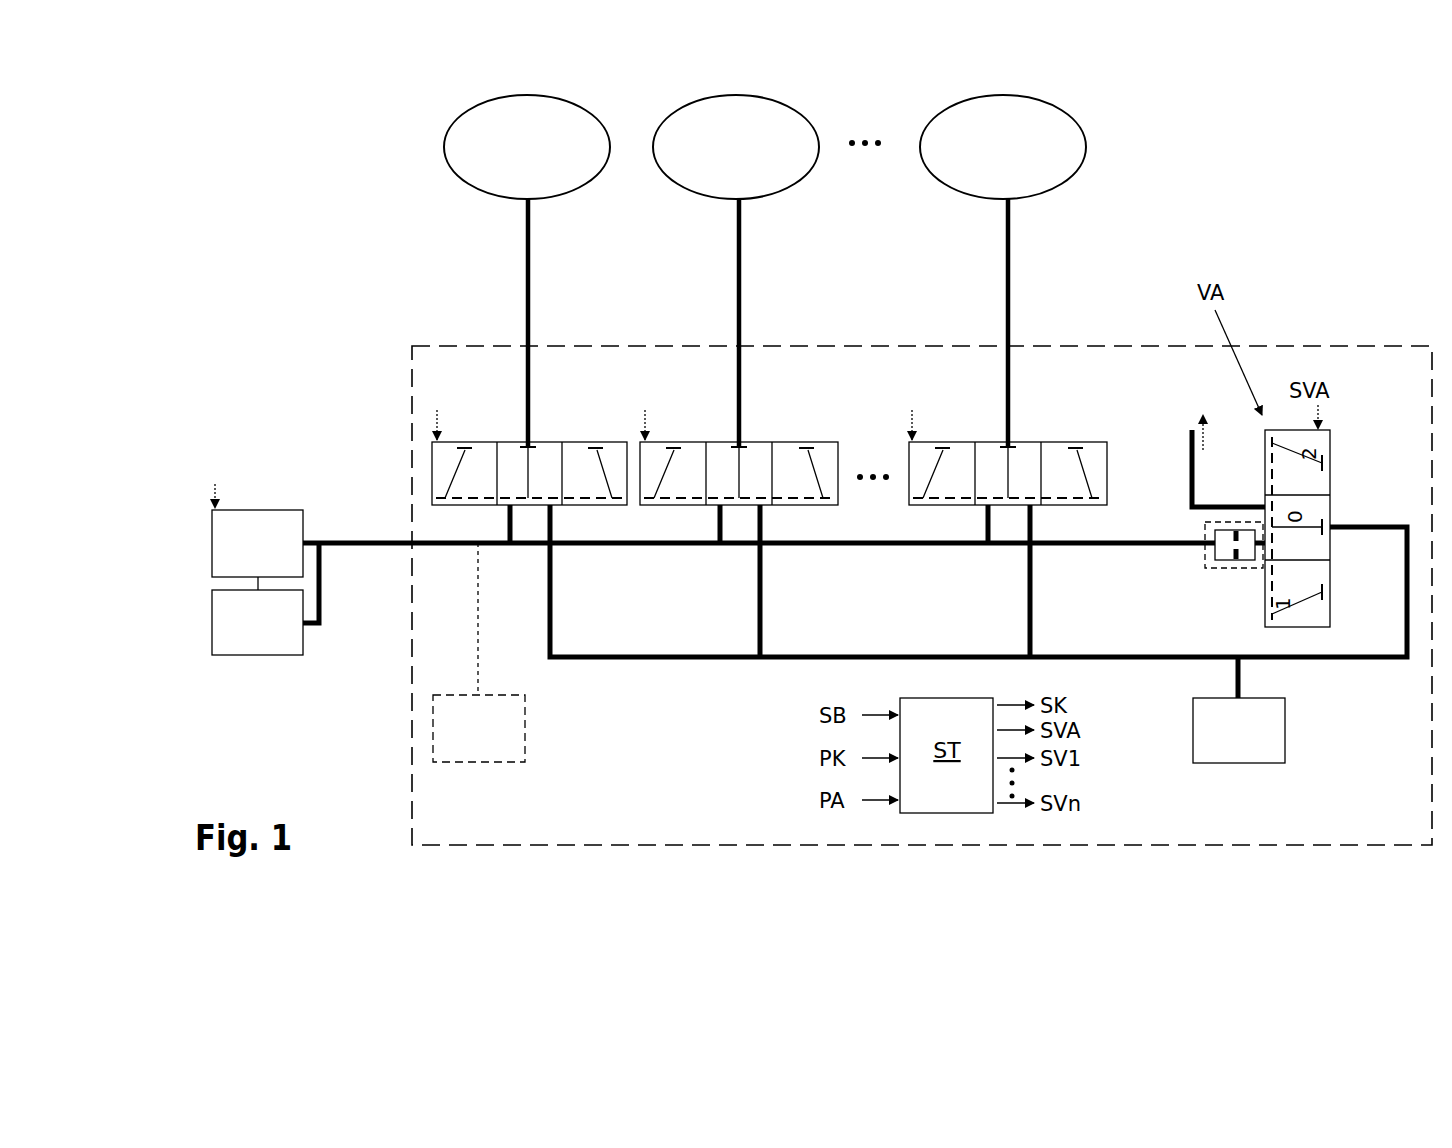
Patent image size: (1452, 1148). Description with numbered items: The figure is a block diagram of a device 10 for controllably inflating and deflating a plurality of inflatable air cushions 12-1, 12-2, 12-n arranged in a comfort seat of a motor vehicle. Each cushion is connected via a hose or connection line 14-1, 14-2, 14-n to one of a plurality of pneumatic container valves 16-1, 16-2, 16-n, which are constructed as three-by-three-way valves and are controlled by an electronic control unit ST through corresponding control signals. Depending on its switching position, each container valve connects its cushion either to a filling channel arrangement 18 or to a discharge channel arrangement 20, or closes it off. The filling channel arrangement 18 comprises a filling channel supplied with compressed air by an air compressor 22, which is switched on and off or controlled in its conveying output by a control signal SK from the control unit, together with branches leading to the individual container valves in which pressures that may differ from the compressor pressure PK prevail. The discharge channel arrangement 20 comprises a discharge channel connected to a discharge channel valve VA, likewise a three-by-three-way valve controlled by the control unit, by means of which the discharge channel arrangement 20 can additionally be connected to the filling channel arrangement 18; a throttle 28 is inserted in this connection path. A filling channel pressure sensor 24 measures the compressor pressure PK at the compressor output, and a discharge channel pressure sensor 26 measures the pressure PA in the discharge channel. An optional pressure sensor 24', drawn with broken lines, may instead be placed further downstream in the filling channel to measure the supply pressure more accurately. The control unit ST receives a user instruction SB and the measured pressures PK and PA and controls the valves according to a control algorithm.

The device 10 is at (393, 320).
The air cushion 12-1 is at (572, 192).
The air cushion 12-2 is at (781, 192).
The air cushion 12-n is at (1042, 196).
The connection line 14-1 is at (531, 322).
The connection line 14-2 is at (742, 322).
The connection line 14-n is at (1011, 322).
The container valve 16-1 is at (497, 408).
The container valve 16-2 is at (710, 408).
The container valve 16-n is at (975, 408).
The filling channel arrangement 18 is at (663, 550).
The discharge channel arrangement 20 is at (660, 663).
The air compressor 22 is at (250, 527).
The filling channel pressure sensor 24 is at (265, 624).
The pressure sensor 24' is at (510, 657).
The discharge channel pressure sensor 26 is at (1200, 727).
The throttle 28 is at (1218, 565).